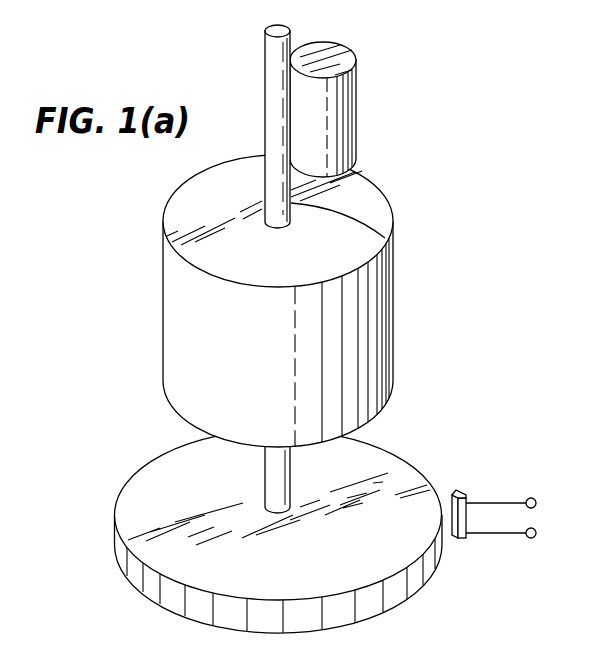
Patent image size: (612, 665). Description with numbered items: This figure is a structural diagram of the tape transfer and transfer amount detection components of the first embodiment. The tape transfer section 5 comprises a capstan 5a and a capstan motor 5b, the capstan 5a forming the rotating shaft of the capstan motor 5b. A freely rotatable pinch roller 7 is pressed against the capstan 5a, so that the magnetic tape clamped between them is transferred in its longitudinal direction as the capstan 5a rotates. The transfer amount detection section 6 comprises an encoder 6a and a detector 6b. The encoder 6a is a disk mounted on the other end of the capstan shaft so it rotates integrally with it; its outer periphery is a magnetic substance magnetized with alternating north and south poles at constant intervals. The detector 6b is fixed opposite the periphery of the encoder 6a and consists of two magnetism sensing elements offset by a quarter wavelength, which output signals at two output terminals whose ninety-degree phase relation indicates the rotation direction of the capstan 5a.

The tape transfer section 5 is at (317, 301).
The capstan 5a is at (382, 234).
The capstan motor 5b is at (383, 278).
The transfer amount detection section 6 is at (336, 519).
The encoder 6a is at (425, 472).
The detector 6b is at (505, 494).
The pinch roller 7 is at (352, 90).